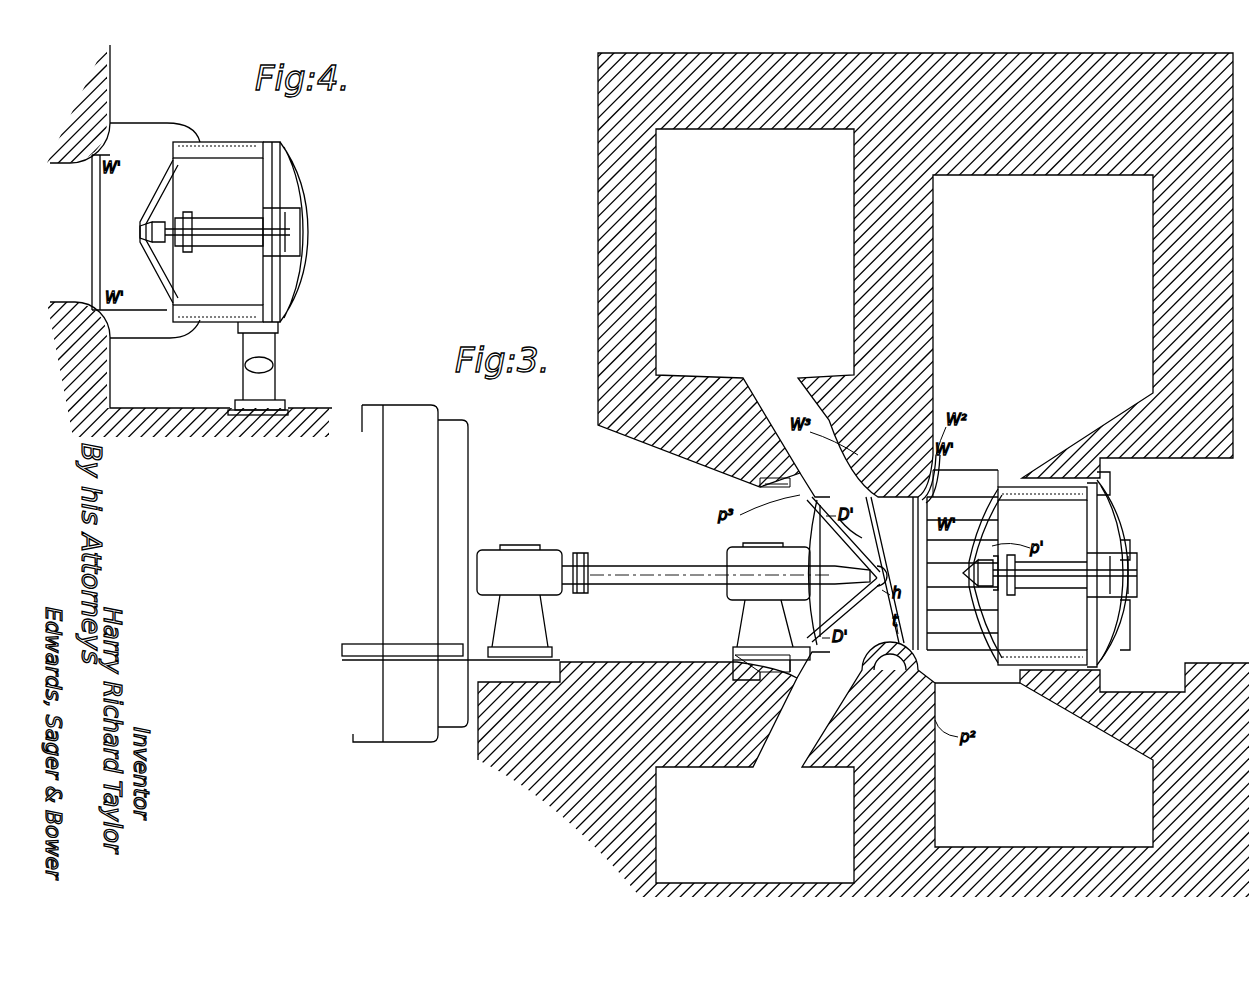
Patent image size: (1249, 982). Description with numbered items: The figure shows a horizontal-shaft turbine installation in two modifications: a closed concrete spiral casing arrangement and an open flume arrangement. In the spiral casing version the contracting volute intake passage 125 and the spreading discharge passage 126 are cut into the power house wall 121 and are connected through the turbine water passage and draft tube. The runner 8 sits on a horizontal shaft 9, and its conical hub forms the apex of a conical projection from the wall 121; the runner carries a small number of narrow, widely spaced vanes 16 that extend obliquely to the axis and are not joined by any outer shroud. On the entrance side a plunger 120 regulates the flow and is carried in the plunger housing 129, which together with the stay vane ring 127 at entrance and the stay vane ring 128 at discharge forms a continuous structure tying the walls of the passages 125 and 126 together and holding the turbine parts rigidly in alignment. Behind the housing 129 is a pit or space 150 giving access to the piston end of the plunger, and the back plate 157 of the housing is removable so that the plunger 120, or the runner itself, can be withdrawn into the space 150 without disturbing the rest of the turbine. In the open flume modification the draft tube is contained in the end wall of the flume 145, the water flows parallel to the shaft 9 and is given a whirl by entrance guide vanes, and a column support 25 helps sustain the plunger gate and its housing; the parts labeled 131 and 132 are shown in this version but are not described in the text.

In FIG. 3, the power house wall 121 is at (625, 262).
In FIG. 3, the discharge passage 126 is at (755, 483).
In FIG. 3, the intake passage 125 is at (1043, 511).
In FIG. 3, the stay vane ring at discharge 128 is at (817, 472).
In FIG. 3, the plunger housing 129 is at (1046, 487).
In FIG. 3, the back plate 157 is at (1108, 500).
In FIG. 4, the back plate 157 is at (300, 195).
In FIG. 3, the pit or space 150 is at (1146, 575).
In FIG. 3, the plunger 120 is at (996, 531).
In FIG. 4, the plunger 120 is at (165, 185).
In FIG. 3, the stay vane ring at entrance 127 is at (958, 480).
In FIG. 4, the stay vane ring at entrance 127 is at (140, 140).
In FIG. 3, the horizontal shaft 9 is at (663, 572).
In FIG. 3, the runner 8 is at (856, 570).
In FIG. 3, the vanes 16 is at (862, 528).
In FIG. 4, the flume 145 is at (624, 470).
In FIG. 4, the hub nose 132 is at (140, 232).
In FIG. 4, the spindle 131 is at (168, 245).
In FIG. 4, the column support 25 is at (240, 375).